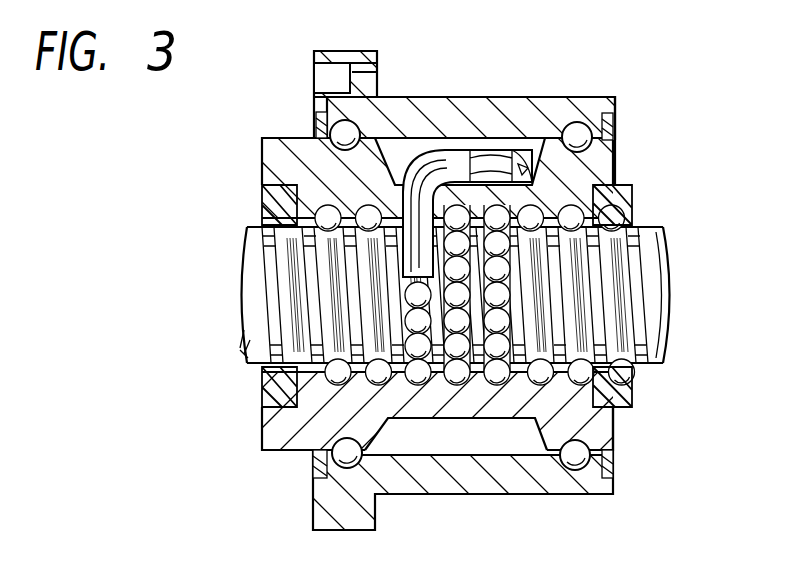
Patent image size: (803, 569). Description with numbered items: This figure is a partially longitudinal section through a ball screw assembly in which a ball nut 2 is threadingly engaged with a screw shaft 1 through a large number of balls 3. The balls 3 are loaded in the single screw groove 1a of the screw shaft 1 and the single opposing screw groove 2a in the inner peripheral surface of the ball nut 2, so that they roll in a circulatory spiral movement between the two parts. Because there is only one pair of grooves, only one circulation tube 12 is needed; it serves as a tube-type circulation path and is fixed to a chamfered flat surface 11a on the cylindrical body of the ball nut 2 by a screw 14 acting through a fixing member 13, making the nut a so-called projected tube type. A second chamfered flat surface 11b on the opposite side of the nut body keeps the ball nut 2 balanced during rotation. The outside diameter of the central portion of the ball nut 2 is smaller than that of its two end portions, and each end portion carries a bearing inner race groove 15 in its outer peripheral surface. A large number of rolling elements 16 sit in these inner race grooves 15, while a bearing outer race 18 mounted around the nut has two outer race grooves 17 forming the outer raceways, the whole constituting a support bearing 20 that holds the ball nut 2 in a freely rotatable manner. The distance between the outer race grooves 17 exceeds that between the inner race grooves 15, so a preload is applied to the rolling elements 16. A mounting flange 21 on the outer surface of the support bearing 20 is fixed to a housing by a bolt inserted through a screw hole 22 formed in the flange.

The screw shaft 1 is at (293, 288).
The screw groove 1a is at (633, 218).
The ball nut 2 is at (462, 410).
The screw groove 2a is at (652, 242).
The balls 3 is at (501, 370).
The flat surface 11a is at (397, 187).
The flat surface 11b is at (421, 418).
The circulation tube 12 is at (432, 165).
The fixing member 13 is at (479, 152).
The screw 14 is at (525, 160).
The bearing inner race groove 15 is at (611, 149).
The rolling elements 16 is at (614, 131).
The outer race groove 17 is at (582, 130).
The bearing outer race 18 is at (392, 105).
The support bearing 20 is at (586, 92).
The mounting flange 21 is at (317, 53).
The screw hole 22 is at (323, 78).